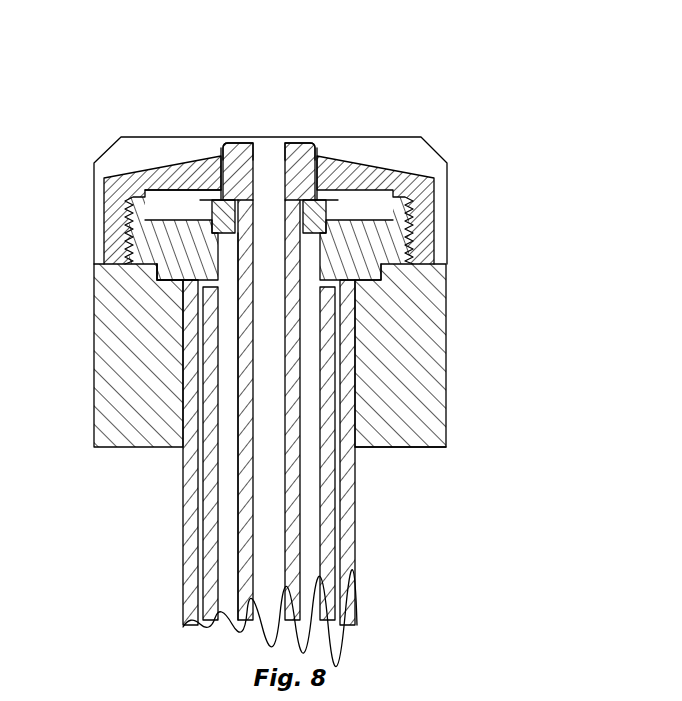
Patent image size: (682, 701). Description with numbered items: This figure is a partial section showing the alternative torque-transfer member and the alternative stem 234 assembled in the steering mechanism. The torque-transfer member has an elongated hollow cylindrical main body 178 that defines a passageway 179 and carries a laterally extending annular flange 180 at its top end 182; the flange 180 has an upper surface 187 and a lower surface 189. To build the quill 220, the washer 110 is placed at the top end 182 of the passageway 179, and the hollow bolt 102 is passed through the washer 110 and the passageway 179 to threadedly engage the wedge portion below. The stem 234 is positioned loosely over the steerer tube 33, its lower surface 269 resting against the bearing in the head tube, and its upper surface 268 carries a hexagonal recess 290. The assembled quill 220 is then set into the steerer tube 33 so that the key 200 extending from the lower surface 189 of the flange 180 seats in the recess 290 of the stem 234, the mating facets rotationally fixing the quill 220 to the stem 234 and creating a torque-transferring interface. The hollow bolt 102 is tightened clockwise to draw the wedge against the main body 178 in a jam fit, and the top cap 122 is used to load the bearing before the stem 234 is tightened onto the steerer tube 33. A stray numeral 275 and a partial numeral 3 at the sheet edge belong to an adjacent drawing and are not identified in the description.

The top cap 122 is at (412, 172).
The annular flange 180 is at (376, 234).
The top end 182 is at (352, 238).
The washer 110 is at (323, 195).
The quill 220 is at (243, 132).
The hollow bolt 102 is at (290, 573).
The passageway 179 is at (232, 367).
The main body 178 is at (210, 534).
The steerer tube 33 is at (347, 560).
The stem 234 is at (145, 441).
The lower surface 189 is at (403, 287).
The lower surface 269 is at (402, 450).
The key 200 is at (158, 269).
The recess 290 is at (178, 290).
The upper surface 187 is at (142, 220).
The upper surface 268 is at (22, 640).
The adjacent figure element 275 is at (38, 700).
The partial numeral 3 is at (6, 72).